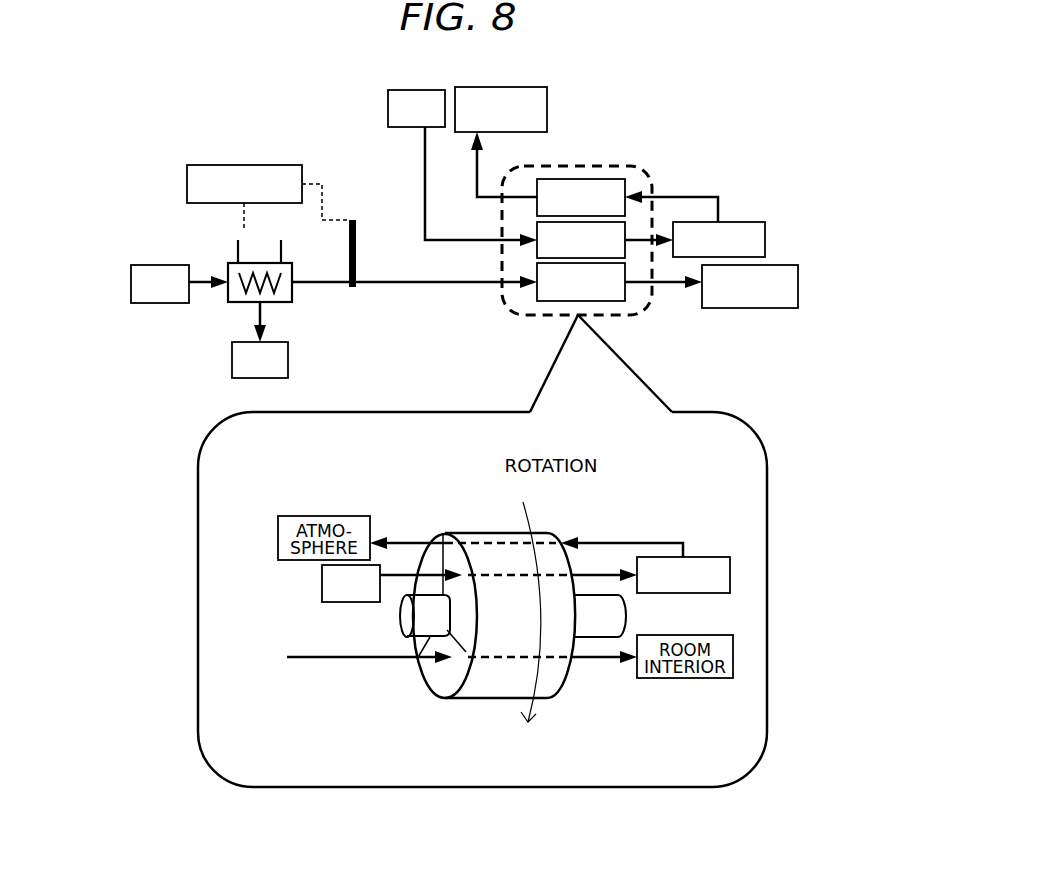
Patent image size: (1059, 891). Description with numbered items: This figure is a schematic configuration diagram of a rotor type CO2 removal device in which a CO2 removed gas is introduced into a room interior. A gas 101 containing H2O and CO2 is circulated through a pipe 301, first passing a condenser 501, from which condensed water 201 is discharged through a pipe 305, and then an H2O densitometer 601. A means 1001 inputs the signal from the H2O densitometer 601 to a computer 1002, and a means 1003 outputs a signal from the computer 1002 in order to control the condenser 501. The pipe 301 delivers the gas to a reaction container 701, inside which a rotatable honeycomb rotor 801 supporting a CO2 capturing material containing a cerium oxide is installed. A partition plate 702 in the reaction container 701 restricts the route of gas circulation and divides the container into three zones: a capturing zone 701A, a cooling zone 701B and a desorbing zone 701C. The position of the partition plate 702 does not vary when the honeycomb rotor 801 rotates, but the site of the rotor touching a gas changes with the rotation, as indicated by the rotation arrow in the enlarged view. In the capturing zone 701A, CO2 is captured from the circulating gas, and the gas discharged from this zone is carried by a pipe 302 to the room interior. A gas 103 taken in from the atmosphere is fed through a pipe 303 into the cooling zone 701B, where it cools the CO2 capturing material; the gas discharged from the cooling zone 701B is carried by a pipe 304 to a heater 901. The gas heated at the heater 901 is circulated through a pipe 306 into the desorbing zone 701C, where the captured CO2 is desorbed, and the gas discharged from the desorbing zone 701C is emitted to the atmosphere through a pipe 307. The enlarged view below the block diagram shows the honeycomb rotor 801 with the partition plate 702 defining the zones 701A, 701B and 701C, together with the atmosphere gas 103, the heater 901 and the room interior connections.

The gas containing H2O and CO2 101 is at (179, 284).
The gas taken in from the atmosphere 103 is at (383, 346).
The condensed water 201 is at (260, 360).
The pipe 301 is at (443, 284).
The pipe 302 is at (670, 284).
The pipe 303 is at (462, 238).
The pipe 304 is at (646, 239).
The pipe 305 is at (280, 322).
The pipe 306 is at (697, 197).
The pipe 307 is at (522, 196).
The condenser 501 is at (295, 263).
The H2O densitometer 601 is at (357, 257).
The reaction container 701 is at (592, 166).
The capturing zone 701A is at (433, 680).
The cooling zone 701B is at (460, 613).
The desorbing zone 701C is at (431, 553).
The partition plate 702 is at (464, 656).
The honeycomb rotor 801 is at (490, 533).
The heater 901 is at (741, 222).
The means for inputting a signal 1001 is at (309, 183).
The computer 1002 is at (230, 164).
The means for outputting a signal 1003 is at (238, 232).